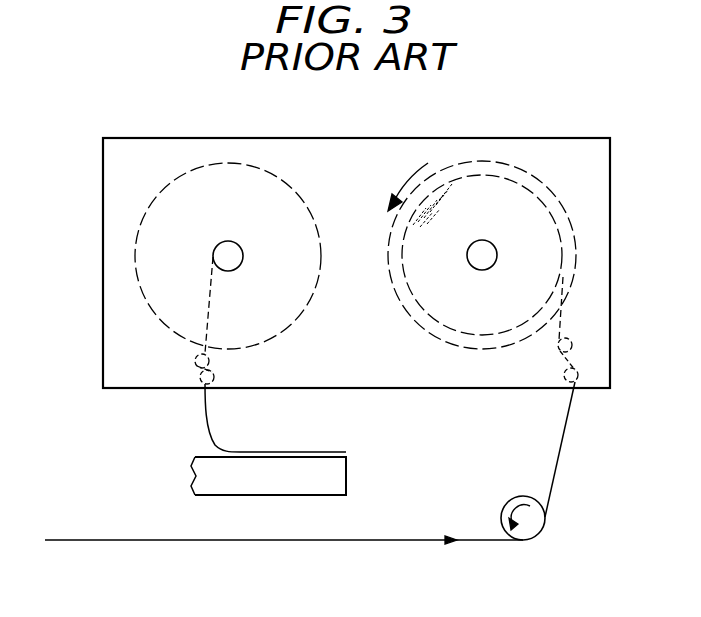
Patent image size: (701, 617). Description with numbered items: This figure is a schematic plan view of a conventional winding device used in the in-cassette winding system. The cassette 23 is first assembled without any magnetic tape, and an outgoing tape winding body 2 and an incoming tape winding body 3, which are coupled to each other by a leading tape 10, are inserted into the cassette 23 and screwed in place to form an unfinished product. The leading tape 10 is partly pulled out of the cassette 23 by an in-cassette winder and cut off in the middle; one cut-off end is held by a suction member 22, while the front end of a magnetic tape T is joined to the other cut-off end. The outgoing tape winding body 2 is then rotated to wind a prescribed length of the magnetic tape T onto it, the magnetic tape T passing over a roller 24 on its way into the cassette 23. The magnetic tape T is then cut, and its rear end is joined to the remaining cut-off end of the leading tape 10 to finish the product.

The outgoing tape winding body 2 is at (555, 197).
The incoming tape winding body 3 is at (153, 192).
The leading tape 10 is at (222, 443).
The suction member 22 is at (346, 478).
The cassette 23 is at (538, 138).
The roller 24 is at (530, 505).
The magnetic tape T is at (558, 458).